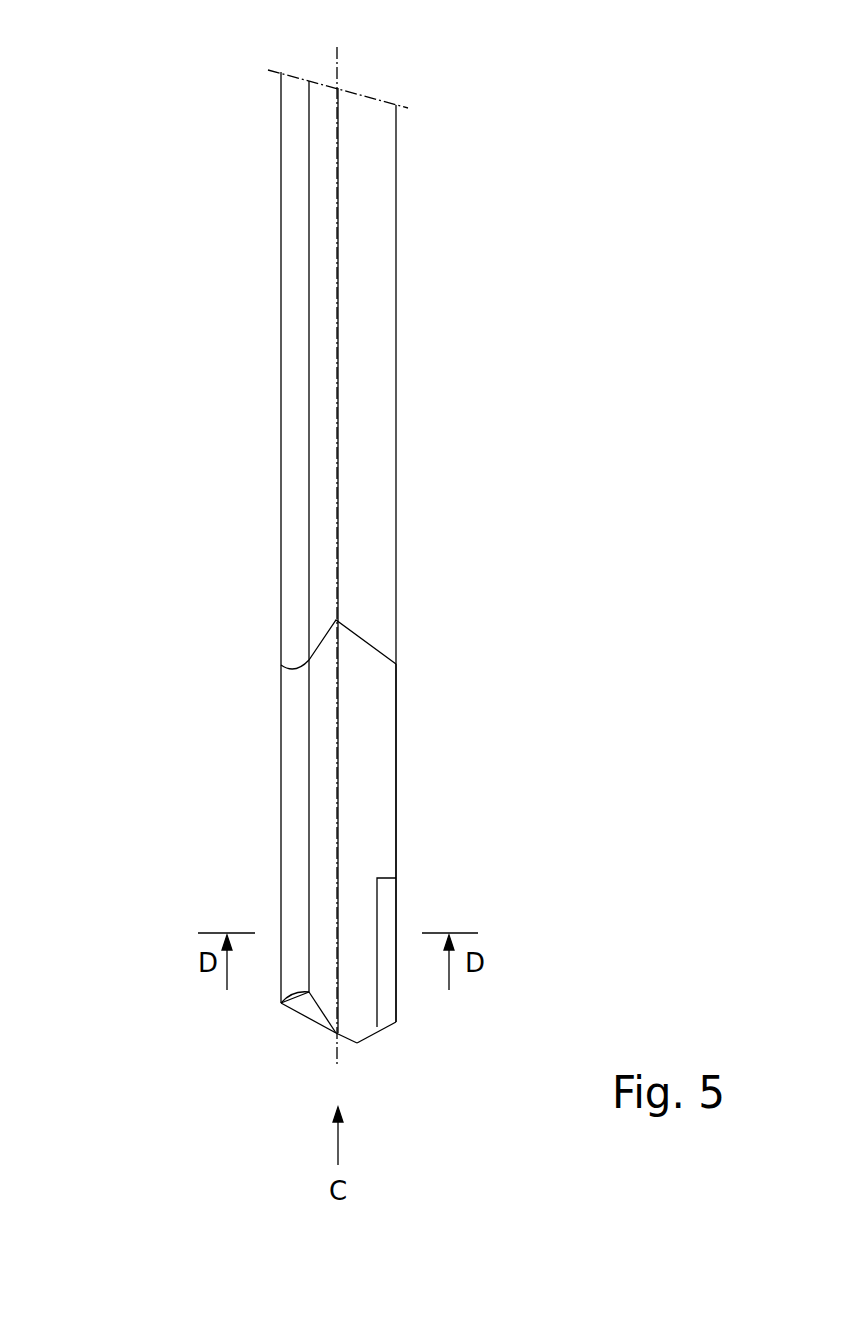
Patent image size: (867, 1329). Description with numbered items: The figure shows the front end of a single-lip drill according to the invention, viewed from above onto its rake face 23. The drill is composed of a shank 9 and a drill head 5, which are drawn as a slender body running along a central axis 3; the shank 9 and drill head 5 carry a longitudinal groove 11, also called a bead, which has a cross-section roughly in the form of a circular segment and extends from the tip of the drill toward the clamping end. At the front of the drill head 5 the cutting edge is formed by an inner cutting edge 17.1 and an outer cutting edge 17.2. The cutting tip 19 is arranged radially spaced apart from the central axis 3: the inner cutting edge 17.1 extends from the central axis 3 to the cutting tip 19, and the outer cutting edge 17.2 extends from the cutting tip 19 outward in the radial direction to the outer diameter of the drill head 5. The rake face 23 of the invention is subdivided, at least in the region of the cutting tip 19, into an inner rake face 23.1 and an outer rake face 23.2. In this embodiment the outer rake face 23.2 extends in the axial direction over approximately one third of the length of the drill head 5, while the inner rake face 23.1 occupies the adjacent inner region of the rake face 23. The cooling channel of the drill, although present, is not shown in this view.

The central axis 3 is at (338, 72).
The shank 9 is at (497, 324).
The longitudinal groove 11 is at (365, 455).
The drill head 5 is at (497, 688).
The rake face 23 is at (383, 830).
The inner rake face 23.1 is at (357, 953).
The outer rake face 23.2 is at (387, 910).
The inner cutting edge 17.1 is at (336, 1038).
The outer cutting edge 17.2 is at (385, 1035).
The cutting tip 19 is at (357, 1045).